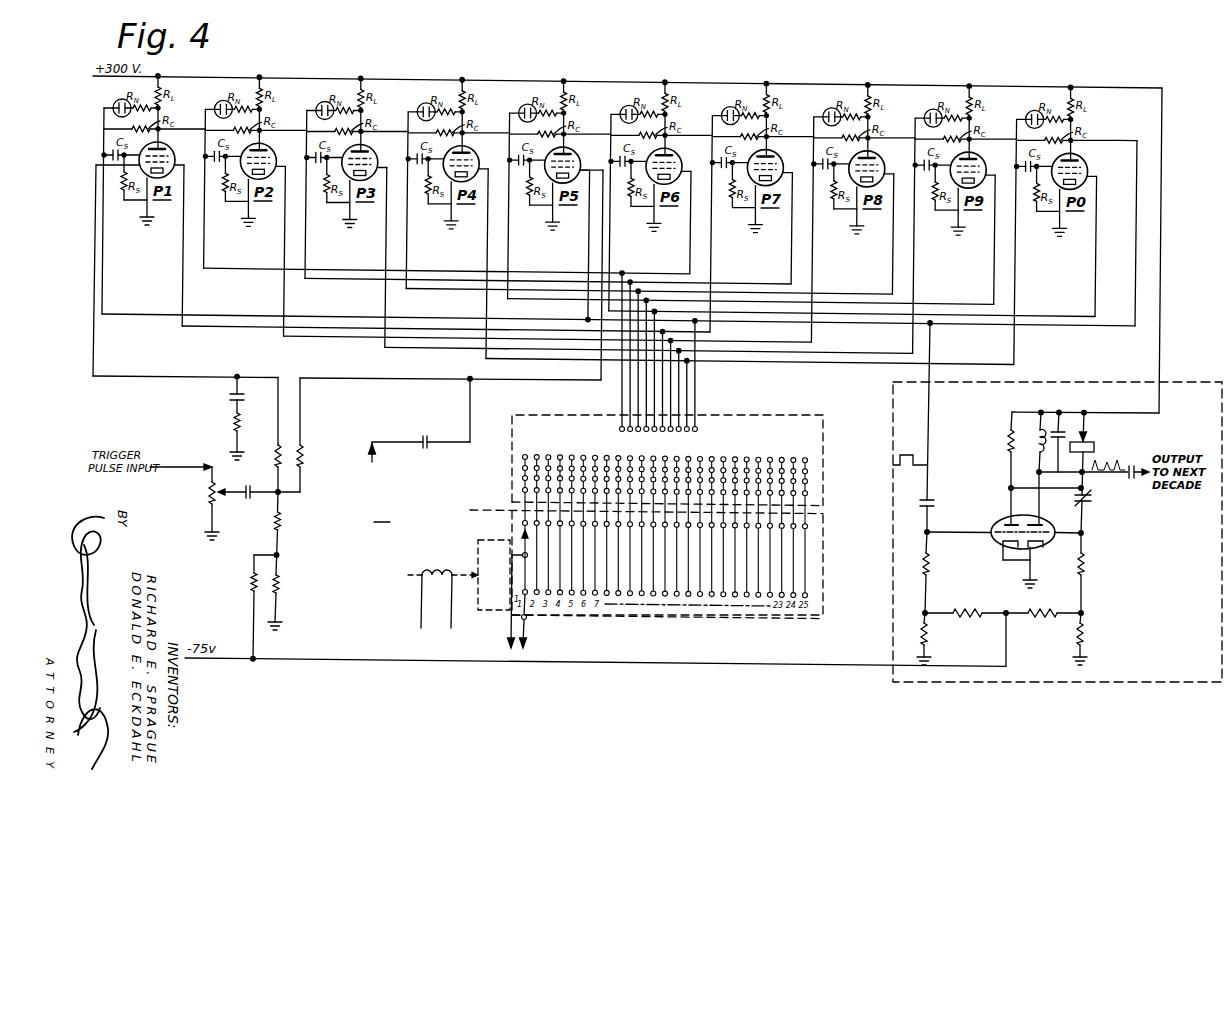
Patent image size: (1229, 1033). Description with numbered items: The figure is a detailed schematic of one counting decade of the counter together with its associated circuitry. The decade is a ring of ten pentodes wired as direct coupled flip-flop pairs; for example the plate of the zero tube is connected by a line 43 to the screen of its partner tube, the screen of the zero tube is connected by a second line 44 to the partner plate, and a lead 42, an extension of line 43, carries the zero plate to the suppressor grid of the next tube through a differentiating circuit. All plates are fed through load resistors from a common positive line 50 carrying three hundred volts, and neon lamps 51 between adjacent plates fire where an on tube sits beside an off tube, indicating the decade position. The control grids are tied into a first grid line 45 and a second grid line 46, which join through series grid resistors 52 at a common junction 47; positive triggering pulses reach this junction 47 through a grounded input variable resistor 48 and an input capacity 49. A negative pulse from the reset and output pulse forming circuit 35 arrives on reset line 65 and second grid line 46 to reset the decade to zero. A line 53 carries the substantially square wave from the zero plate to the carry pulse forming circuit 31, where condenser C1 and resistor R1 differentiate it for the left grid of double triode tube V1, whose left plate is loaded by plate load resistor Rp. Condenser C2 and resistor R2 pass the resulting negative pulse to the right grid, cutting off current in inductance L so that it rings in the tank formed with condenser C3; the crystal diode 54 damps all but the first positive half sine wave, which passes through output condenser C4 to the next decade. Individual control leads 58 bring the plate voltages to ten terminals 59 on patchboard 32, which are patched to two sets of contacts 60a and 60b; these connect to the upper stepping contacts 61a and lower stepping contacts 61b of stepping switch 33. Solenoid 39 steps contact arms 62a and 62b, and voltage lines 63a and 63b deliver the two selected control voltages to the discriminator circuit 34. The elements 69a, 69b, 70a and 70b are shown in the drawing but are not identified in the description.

The carry pulse forming circuit 31 is at (1164, 683).
The patchboard 32 is at (826, 420).
The stepping switch 33 is at (826, 602).
The discriminator circuit 34 is at (562, 655).
The reset and output pulse forming circuit 35 is at (382, 495).
The solenoid 39 is at (427, 570).
The lead 42 is at (169, 313).
The line 43 is at (866, 326).
The second line 44 is at (1029, 316).
The first grid line 45 is at (93, 340).
The second grid line 46 is at (403, 378).
The common junction 47 is at (282, 495).
The input variable resistor 48 is at (210, 486).
The input capacity 49 is at (247, 496).
The common positive line 50 is at (411, 77).
The neon lamps 51 is at (551, 108).
The series grid resistors 52 is at (278, 456).
The line 53 is at (929, 440).
The crystal diode 54 is at (1094, 444).
The control leads 58 is at (675, 349).
The terminals 59 is at (674, 435).
The set of contacts 60a is at (836, 491).
The set of contacts 60b is at (836, 466).
The upper stepping contacts 61a is at (836, 526).
The lower stepping contacts 61b is at (836, 580).
The switch contact arm 62a is at (521, 553).
The switch contact arm 62b is at (515, 602).
The voltage line 63a is at (509, 626).
The voltage line 63b is at (528, 618).
The reset line 65 is at (385, 442).
The contact 69a is at (522, 479).
The contact 69b is at (522, 457).
The bus bar 70a is at (646, 510).
The bus bar 70b is at (806, 555).
The condenser C1 is at (936, 492).
The condenser C2 is at (1090, 511).
The condenser C3 is at (1063, 443).
The output condenser C4 is at (1132, 476).
The resistor R1 is at (929, 562).
The resistor R2 is at (1083, 562).
The plate load resistor Rp is at (1008, 439).
The inductance L is at (1082, 443).
The double triode tube V1 is at (993, 546).